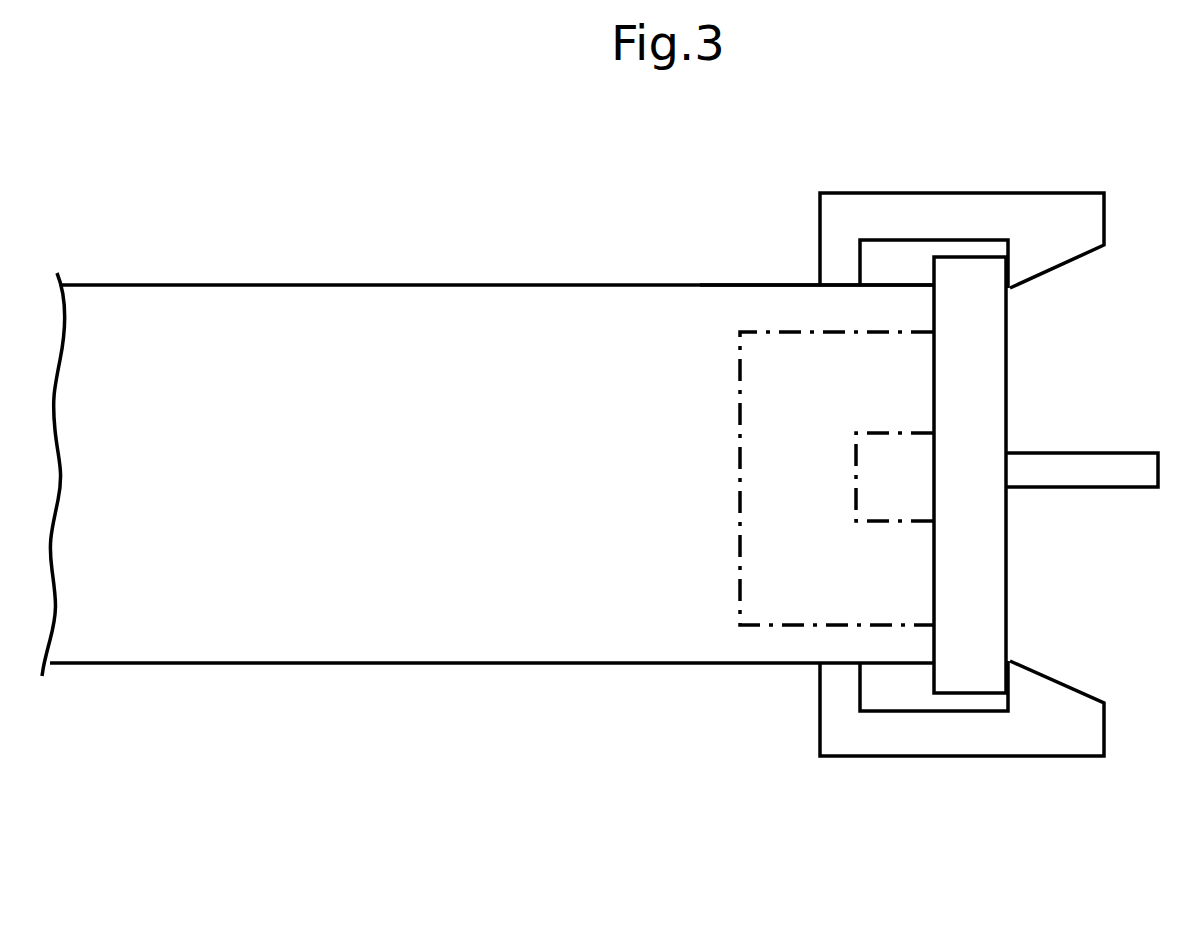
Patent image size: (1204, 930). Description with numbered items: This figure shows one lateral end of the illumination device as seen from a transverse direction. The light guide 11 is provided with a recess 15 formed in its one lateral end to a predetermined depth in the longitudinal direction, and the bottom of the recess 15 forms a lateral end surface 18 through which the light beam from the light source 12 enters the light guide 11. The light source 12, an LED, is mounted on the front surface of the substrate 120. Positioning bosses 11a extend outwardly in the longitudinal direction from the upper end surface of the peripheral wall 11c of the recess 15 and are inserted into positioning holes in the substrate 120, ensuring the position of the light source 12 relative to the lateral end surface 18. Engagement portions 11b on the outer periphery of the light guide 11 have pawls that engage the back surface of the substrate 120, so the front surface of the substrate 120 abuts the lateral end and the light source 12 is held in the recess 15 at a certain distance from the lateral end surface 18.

The light guide 11 is at (303, 390).
The positioning boss 11a is at (1067, 450).
The engagement portion 11b is at (972, 193).
The peripheral wall 11c is at (782, 285).
The light source 12 is at (893, 520).
The recess 15 is at (811, 529).
The lateral end surface 18 is at (741, 452).
The substrate 120 is at (975, 588).